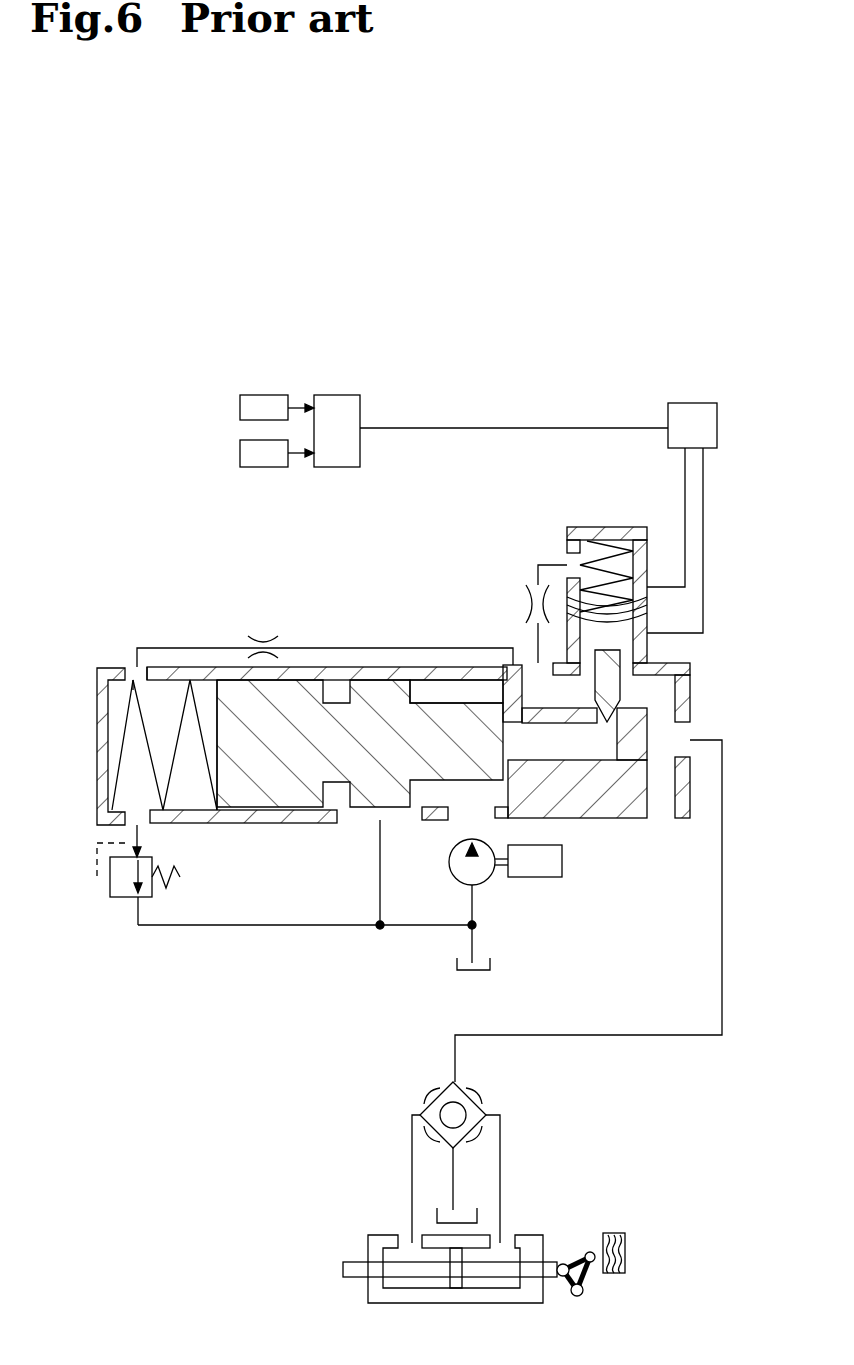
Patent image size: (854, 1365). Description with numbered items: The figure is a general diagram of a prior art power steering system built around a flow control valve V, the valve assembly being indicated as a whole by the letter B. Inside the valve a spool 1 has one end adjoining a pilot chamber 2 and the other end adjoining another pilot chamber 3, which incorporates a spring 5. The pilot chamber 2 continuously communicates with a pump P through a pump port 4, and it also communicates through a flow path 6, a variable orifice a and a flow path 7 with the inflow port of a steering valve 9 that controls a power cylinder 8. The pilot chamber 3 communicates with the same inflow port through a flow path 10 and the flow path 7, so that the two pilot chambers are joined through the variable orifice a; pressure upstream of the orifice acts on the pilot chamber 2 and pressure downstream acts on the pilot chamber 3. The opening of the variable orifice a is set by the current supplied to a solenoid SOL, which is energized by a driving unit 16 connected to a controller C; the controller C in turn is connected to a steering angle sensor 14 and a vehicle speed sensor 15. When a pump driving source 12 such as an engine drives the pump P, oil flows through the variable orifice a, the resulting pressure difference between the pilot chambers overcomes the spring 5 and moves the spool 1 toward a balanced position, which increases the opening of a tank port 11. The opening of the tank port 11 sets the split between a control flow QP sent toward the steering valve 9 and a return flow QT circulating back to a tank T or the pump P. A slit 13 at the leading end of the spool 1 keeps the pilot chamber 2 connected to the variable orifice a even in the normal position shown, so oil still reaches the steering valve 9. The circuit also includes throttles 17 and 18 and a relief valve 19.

The spool 1 is at (310, 690).
The pilot chamber 2 is at (450, 685).
The pilot chamber 3 is at (160, 687).
The pump port 4 is at (460, 812).
The spring 5 is at (133, 680).
The flow path 6 is at (580, 745).
The flow path 7 is at (667, 795).
The power cylinder 8 is at (522, 1235).
The steering valve 9 is at (422, 1110).
The flow path 10 is at (373, 645).
The tank port 11 is at (357, 813).
The pump driving source 12 is at (548, 880).
The slit 13 is at (503, 680).
The steering angle sensor 14 is at (252, 410).
The vehicle speed sensor 15 is at (252, 455).
The driving unit 16 is at (688, 420).
The throttle 17 is at (265, 636).
The throttle 18 is at (528, 600).
The relief valve 19 is at (118, 900).
The variable orifice a is at (613, 727).
The brake valve B is at (210, 612).
The controller C is at (338, 408).
The flow control valve V is at (72, 712).
The pump P is at (485, 880).
The tank T is at (457, 963).
The return flow QT is at (305, 874).
The control flow QP is at (595, 893).
The solenoid SOL is at (603, 580).